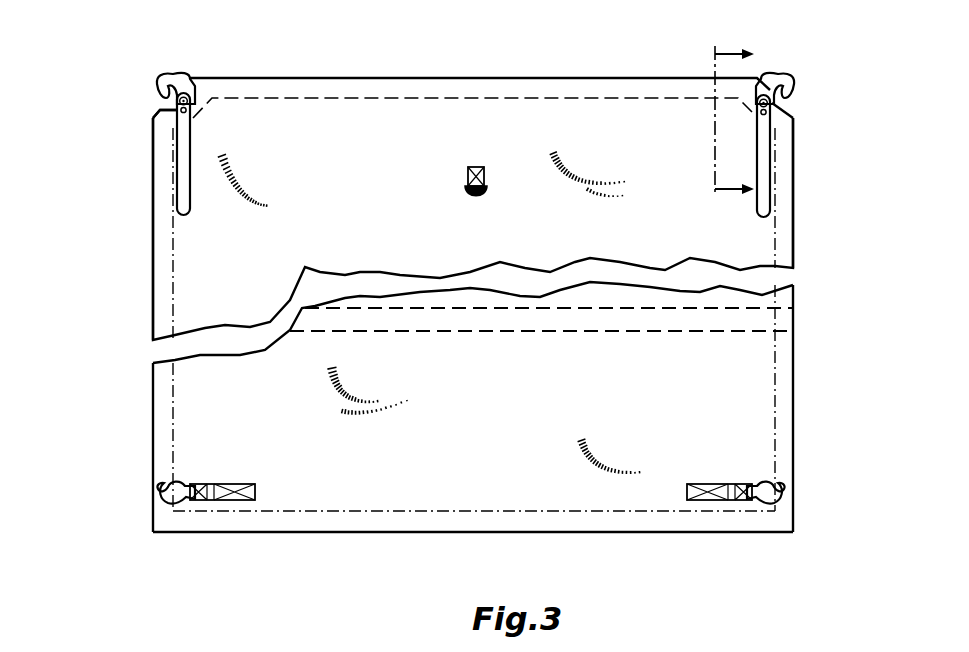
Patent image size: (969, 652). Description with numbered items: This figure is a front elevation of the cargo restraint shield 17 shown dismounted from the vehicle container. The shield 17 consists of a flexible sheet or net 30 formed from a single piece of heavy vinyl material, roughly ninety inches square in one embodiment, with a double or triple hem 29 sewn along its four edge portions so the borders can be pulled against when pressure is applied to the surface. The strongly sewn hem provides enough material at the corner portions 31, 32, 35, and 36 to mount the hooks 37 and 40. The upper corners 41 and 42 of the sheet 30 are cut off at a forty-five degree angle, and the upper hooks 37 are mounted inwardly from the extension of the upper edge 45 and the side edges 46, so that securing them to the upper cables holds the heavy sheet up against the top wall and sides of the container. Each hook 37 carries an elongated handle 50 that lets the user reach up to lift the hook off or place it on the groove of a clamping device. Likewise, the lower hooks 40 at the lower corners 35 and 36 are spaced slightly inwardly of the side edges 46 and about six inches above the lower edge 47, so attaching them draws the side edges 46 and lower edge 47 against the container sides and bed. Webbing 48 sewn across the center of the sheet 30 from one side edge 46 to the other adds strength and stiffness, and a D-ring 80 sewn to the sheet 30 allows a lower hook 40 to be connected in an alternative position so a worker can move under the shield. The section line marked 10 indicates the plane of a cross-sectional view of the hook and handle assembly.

The restraint shield 17 is at (108, 48).
The hem 29 is at (457, 88).
The upper edge 45 is at (566, 78).
The upper corner portion 31 is at (204, 87).
The hooks 37 is at (784, 79).
The upper corner 42 is at (793, 109).
The upper corner 41 is at (162, 109).
The upper corner portion 32 is at (782, 123).
The side edges 46 is at (152, 273).
The elongated handle 50 is at (182, 173).
The flexible sheet or net 30 is at (341, 200).
The D-ring 80 is at (476, 198).
The webbing 48 is at (553, 322).
The hooks 40 is at (782, 491).
The lower corner 35 is at (164, 521).
The lower edge 47 is at (418, 536).
The lower corner 36 is at (767, 520).
The section line 10- 10 is at (718, 121).